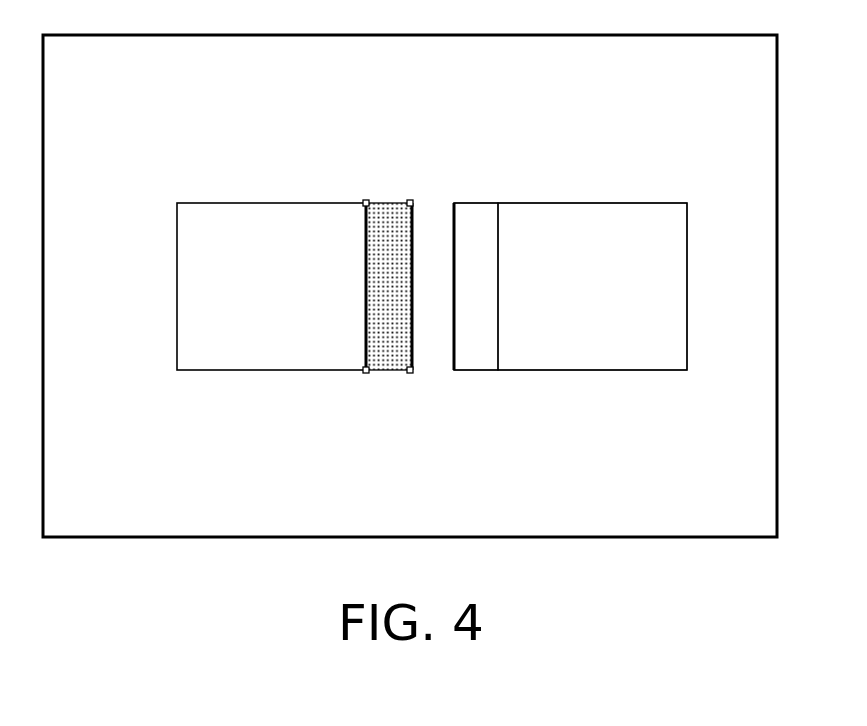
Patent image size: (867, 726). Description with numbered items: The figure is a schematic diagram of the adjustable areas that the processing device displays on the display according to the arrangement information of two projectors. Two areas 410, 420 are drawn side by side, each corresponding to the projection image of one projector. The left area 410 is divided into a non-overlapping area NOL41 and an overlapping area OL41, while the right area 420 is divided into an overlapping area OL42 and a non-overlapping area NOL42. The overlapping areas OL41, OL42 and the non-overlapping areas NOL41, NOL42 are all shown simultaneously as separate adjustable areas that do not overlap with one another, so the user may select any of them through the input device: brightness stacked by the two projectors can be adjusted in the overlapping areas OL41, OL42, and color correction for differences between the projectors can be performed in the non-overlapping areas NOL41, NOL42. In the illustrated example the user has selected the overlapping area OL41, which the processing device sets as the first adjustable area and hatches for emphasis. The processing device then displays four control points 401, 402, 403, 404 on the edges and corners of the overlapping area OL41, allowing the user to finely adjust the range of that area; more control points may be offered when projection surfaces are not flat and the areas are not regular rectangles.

The control point 401 is at (366, 201).
The control point 402 is at (410, 201).
The control point 403 is at (414, 403).
The control point 404 is at (366, 372).
The overlapping area OL41 is at (383, 313).
The non-overlapping area NOL41 is at (245, 348).
The area 410 is at (307, 335).
The overlapping area OL42 is at (476, 353).
The non-overlapping area NOL42 is at (570, 352).
The area 420 is at (567, 352).